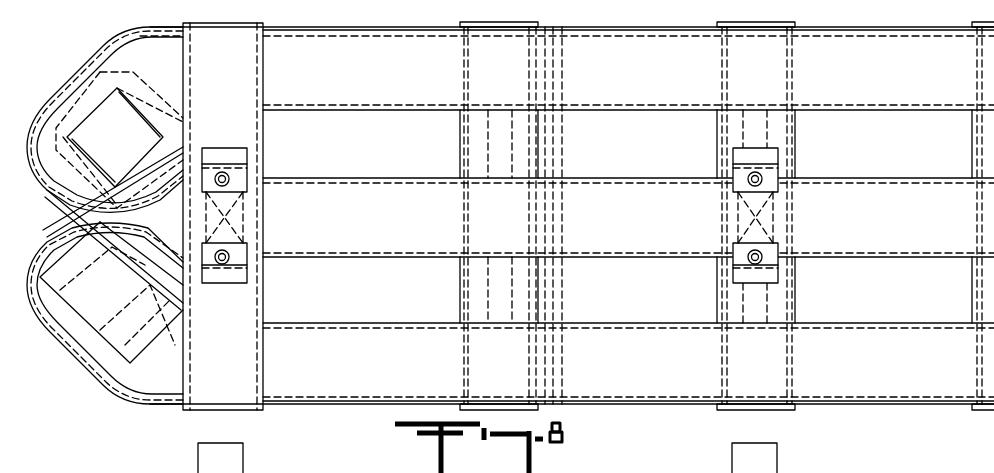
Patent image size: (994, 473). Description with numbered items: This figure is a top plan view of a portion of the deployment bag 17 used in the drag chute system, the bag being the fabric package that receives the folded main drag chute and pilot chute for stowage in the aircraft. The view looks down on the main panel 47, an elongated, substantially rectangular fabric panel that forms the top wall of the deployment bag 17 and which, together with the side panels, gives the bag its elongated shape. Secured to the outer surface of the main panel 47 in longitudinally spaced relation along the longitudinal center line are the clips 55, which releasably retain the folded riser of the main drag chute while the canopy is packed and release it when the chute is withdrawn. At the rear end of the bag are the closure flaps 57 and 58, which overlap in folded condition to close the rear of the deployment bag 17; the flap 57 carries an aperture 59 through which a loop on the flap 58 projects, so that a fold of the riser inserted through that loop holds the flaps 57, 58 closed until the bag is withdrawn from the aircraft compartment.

The deployment bag 17 is at (655, 406).
The main panel 47 is at (938, 154).
The clips 55 is at (778, 156).
The closure flap 57 is at (58, 94).
The closure flap 58 is at (88, 372).
The aperture 59 is at (128, 108).